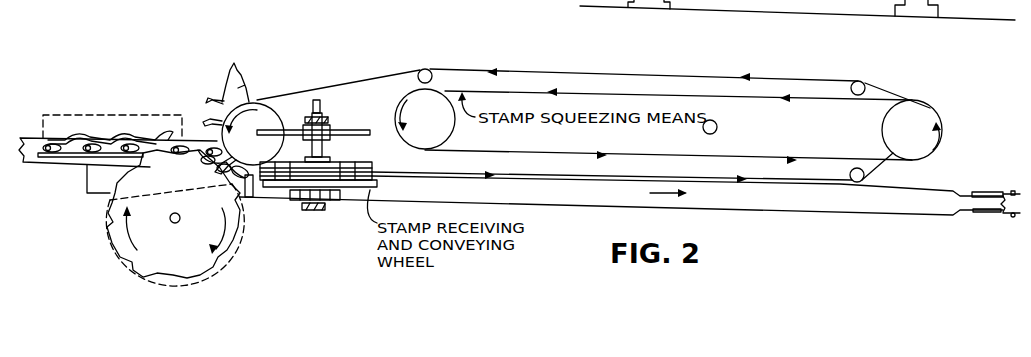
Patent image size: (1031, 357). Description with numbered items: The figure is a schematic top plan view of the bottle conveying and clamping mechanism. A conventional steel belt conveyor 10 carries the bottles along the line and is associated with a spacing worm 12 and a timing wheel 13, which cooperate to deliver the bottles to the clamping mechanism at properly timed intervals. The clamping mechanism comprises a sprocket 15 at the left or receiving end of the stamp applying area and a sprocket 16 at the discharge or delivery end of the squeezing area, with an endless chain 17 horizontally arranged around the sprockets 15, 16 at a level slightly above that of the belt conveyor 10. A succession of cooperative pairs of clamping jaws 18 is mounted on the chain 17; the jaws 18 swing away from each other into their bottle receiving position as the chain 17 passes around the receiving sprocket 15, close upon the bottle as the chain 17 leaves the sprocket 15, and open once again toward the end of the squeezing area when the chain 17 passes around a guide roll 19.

The steel belt conveyor 10 is at (80, 163).
The spacing worm 12 is at (148, 98).
The timing wheel 13 is at (167, 181).
The sprocket 15 is at (257, 158).
The sprocket 16 is at (918, 140).
The endless chain 17 is at (290, 95).
The clamping jaws 18 is at (248, 100).
The guide roll 19 is at (850, 176).